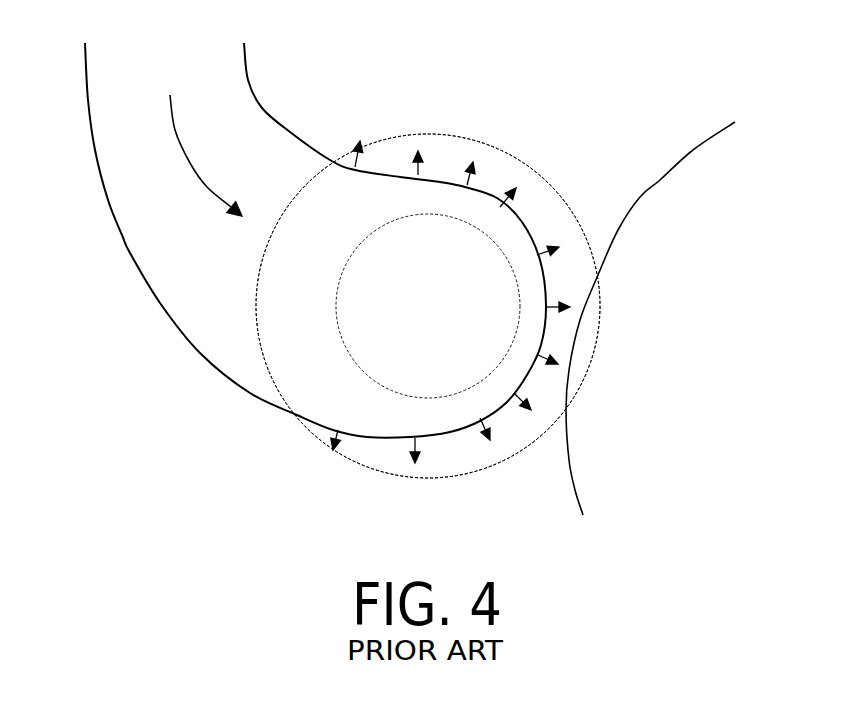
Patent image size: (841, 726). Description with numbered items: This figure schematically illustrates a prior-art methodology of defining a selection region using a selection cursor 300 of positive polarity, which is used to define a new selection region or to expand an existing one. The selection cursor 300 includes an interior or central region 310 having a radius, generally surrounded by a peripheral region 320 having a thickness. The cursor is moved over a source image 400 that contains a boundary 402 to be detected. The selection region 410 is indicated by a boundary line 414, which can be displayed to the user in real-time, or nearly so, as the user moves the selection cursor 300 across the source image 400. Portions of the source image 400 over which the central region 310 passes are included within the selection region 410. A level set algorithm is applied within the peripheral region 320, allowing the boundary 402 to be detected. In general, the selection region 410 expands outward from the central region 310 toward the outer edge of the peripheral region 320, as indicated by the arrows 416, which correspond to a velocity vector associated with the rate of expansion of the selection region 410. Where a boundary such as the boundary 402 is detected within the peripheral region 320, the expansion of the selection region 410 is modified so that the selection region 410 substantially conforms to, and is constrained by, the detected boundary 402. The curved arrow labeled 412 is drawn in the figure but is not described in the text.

The selection cursor 300 is at (478, 142).
The interior region 310 is at (399, 309).
The peripheral region 320 is at (315, 309).
The source image 400 is at (625, 84).
The boundary 402 is at (642, 196).
The selection region 410 is at (184, 76).
The fluid flow direction arrow 412 is at (197, 182).
The boundary line 414 is at (130, 251).
The arrows 416 is at (482, 442).